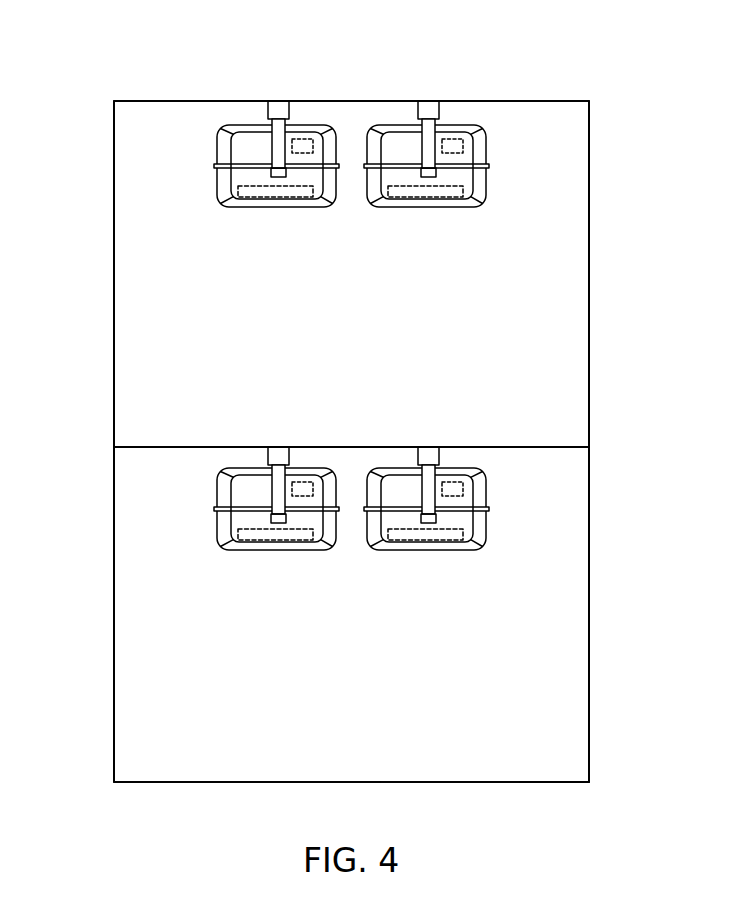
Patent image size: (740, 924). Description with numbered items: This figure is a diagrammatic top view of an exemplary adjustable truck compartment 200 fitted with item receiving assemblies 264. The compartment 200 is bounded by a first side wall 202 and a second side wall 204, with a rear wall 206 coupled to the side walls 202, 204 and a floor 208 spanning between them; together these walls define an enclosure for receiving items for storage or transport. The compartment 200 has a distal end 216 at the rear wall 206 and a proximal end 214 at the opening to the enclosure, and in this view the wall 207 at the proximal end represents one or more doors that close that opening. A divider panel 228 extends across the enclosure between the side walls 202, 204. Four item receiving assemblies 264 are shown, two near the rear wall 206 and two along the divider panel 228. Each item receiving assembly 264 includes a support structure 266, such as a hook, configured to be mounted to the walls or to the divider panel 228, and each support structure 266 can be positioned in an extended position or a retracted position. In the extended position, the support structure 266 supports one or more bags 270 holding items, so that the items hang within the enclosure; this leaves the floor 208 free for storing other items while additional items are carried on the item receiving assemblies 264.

The adjustable truck compartment 200 is at (520, 52).
The first side wall 202 is at (114, 412).
The second side wall 204 is at (589, 208).
The rear wall 206 is at (556, 101).
The wall 207 is at (447, 782).
The floor 208 is at (380, 752).
The proximal end 214 is at (282, 792).
The distal end 216 is at (357, 89).
The divider panel 228 is at (581, 448).
The item receiving assembly 264 is at (209, 530).
The support structure 266 is at (272, 456).
The bag 270 is at (217, 497).